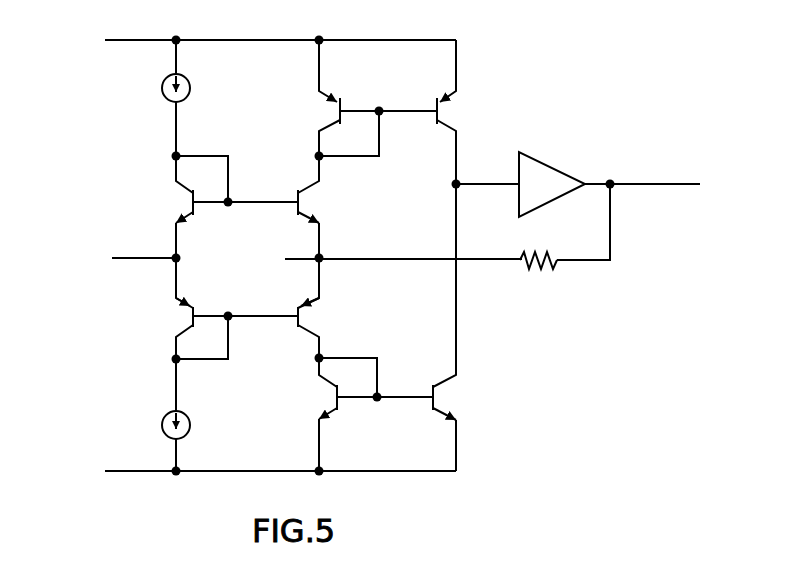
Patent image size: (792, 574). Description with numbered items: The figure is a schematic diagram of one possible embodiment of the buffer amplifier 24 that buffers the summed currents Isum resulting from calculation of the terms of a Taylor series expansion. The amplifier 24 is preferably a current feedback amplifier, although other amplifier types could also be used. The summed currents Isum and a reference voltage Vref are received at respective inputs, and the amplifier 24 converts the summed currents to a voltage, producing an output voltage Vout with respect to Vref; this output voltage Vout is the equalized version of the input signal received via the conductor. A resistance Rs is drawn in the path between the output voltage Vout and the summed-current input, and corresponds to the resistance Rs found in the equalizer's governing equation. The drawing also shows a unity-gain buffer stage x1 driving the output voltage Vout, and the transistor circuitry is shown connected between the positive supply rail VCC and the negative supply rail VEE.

The buffer amplifier 24 is at (398, 254).
The resistance Rs is at (542, 282).
The unity-gain buffer x1 is at (552, 184).
The summed currents Isum is at (372, 263).
The reference voltage Vref is at (113, 262).
The output voltage Vout is at (669, 188).
The positive supply rail VCC is at (250, 40).
The negative supply rail VEE is at (249, 470).